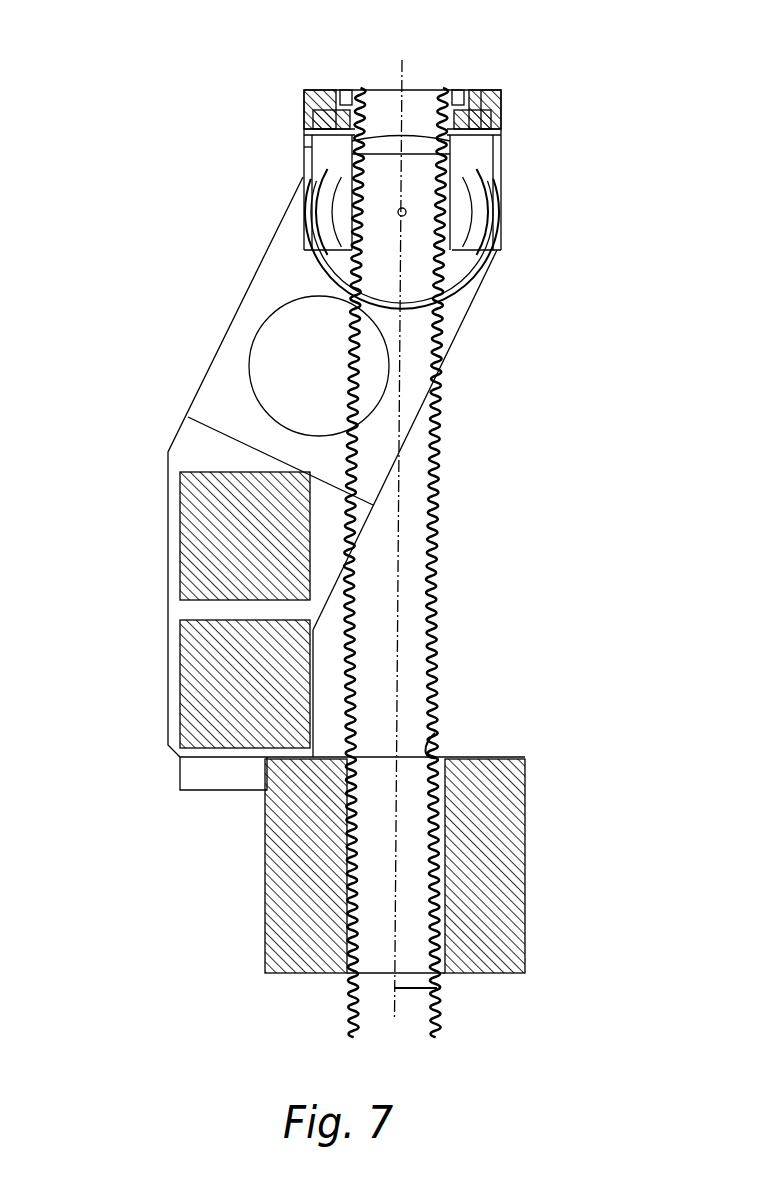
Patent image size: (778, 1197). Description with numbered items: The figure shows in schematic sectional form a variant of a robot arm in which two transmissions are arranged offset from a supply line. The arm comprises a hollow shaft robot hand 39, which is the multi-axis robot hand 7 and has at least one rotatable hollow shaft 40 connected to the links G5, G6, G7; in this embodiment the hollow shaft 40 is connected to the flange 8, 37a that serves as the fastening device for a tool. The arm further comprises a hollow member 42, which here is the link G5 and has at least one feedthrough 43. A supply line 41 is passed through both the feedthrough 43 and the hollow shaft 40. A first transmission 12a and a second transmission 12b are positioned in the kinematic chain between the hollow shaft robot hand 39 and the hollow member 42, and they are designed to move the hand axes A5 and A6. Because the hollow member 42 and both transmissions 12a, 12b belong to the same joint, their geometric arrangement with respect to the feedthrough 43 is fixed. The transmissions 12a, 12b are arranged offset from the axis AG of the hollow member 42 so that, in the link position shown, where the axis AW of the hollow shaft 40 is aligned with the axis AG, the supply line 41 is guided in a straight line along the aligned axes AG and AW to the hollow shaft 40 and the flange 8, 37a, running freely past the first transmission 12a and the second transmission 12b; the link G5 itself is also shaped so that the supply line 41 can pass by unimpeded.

The hollow shaft 40 is at (360, 118).
The supply line 41 is at (434, 578).
The axis of the hollow shaft AW is at (402, 72).
The flange 8 is at (490, 132).
The flange 37a is at (490, 132).
The link G7 is at (465, 90).
The link G6 is at (501, 133).
The robot hand 7 is at (416, 159).
The hollow shaft robot hand 39 is at (416, 159).
The hand axis A5 is at (398, 212).
The hand axis A6 is at (303, 147).
The link G5 is at (220, 390).
The first transmission 12a is at (203, 533).
The second transmission 12b is at (205, 686).
The hollow member 42 is at (498, 872).
The feedthrough 43 is at (435, 733).
The axis of the hollow member AG is at (438, 988).